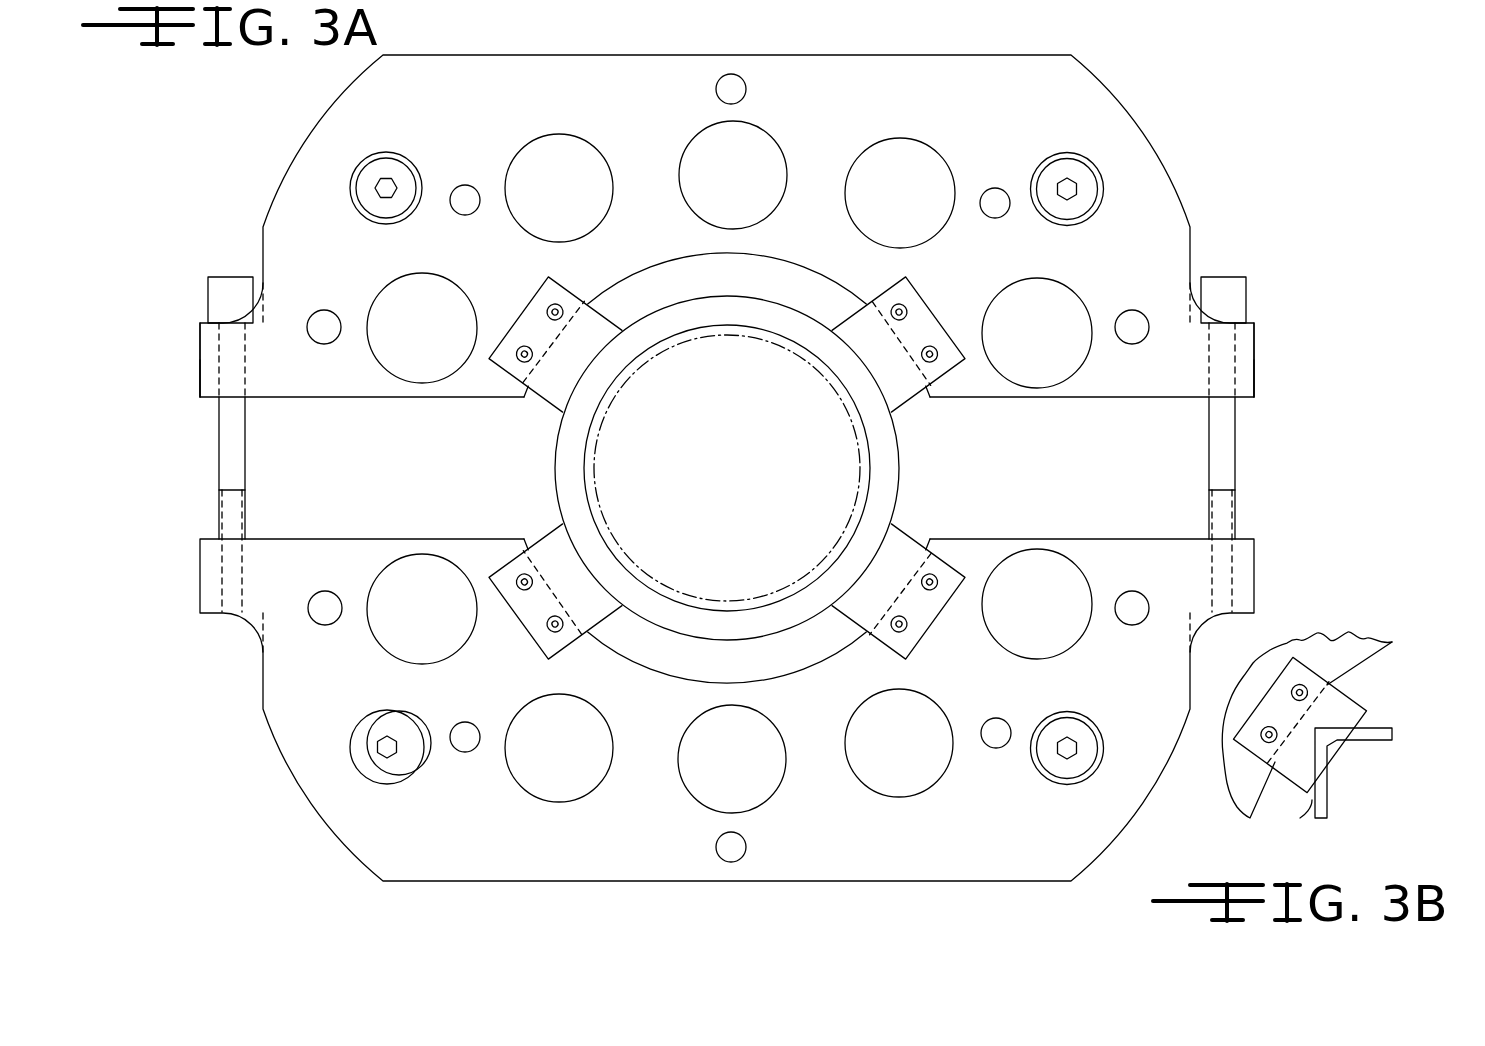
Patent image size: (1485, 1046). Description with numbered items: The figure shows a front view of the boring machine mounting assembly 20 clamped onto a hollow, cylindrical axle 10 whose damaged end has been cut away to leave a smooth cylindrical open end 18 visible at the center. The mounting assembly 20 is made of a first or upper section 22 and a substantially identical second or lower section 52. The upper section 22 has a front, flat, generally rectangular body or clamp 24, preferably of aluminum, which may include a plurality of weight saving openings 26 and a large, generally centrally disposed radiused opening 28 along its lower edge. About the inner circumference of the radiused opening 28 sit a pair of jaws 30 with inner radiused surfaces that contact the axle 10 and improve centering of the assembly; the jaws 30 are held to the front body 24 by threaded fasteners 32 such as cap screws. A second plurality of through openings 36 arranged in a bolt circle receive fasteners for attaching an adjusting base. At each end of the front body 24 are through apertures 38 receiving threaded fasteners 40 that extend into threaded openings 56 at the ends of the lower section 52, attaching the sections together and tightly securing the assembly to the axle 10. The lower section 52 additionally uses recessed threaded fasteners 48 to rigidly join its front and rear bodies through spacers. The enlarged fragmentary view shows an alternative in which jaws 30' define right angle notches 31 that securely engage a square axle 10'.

In FIG. 3A, the hollow cylindrical axle 10 is at (770, 468).
In FIG. 3B, the square axle 10' is at (1283, 823).
In FIG. 3A, the cylindrical open end 18 is at (705, 477).
In FIG. 3A, the mounting assembly 20 is at (1192, 135).
In FIG. 3A, the first or upper section 22 is at (772, 214).
In FIG. 3A, the front body or clamp 24 is at (815, 76).
In FIG. 3B, the front body or clamp 24 is at (1328, 658).
In FIG. 3A, the weight saving openings 26 is at (708, 163).
In FIG. 3A, the radiused opening 28 is at (745, 253).
In FIG. 3A, the jaws 30 is at (725, 460).
In FIG. 3B, the jaws with right angle notches 30' is at (1301, 689).
In FIG. 3B, the right angle notches 31 is at (1325, 742).
In FIG. 3A, the threaded fasteners 32 is at (547, 316).
In FIG. 3A, the second plurality of through openings 36 is at (735, 84).
In FIG. 3A, the through apertures 38 is at (205, 357).
In FIG. 3A, the threaded fasteners 40 is at (208, 278).
In FIG. 3A, the recessed threaded fasteners 48 is at (376, 186).
In FIG. 3A, the second or lower section 52 is at (673, 720).
In FIG. 3A, the threaded openings 56 is at (245, 563).